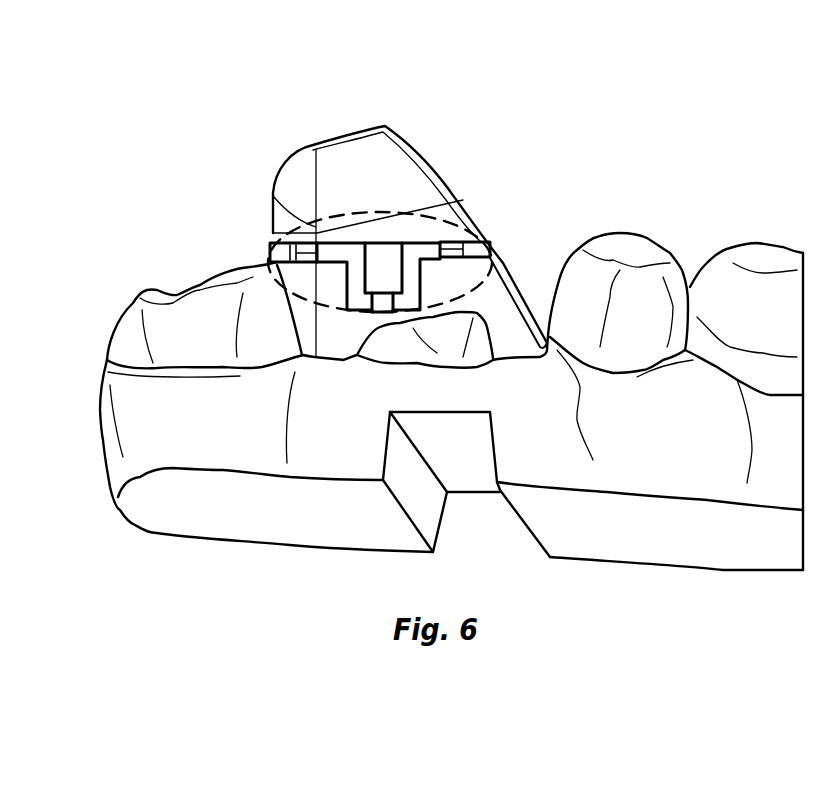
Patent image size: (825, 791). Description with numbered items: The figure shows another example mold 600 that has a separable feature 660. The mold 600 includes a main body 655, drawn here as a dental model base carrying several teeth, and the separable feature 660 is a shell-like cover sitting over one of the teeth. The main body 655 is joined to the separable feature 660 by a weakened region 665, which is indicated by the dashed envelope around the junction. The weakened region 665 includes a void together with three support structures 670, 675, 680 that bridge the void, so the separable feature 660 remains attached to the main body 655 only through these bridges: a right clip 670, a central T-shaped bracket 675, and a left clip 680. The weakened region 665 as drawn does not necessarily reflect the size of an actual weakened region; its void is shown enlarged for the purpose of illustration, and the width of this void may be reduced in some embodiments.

The mold 600 is at (455, 90).
The main body 655 is at (602, 537).
The separable feature 660 is at (423, 188).
The weakened region 665 is at (310, 228).
The support structure 670 is at (463, 243).
The support structure 675 is at (278, 249).
The support structure 680 is at (273, 260).